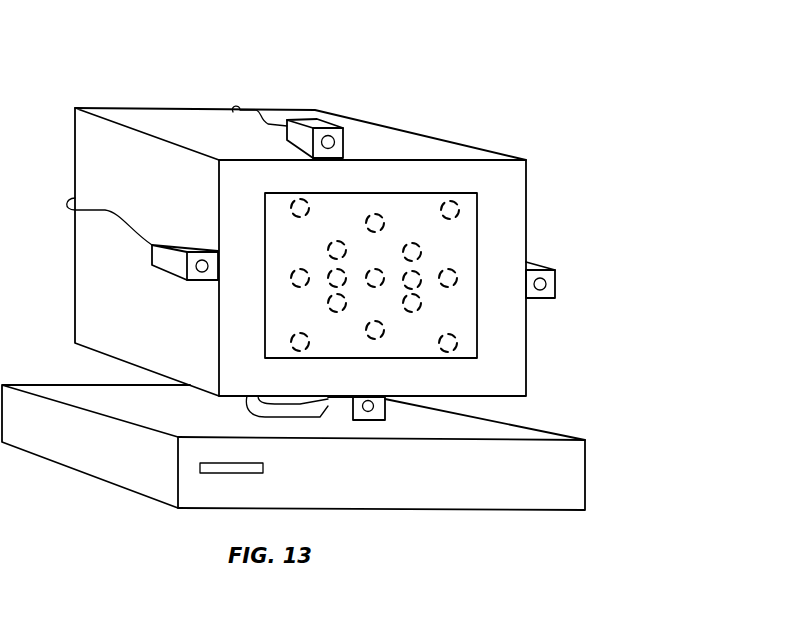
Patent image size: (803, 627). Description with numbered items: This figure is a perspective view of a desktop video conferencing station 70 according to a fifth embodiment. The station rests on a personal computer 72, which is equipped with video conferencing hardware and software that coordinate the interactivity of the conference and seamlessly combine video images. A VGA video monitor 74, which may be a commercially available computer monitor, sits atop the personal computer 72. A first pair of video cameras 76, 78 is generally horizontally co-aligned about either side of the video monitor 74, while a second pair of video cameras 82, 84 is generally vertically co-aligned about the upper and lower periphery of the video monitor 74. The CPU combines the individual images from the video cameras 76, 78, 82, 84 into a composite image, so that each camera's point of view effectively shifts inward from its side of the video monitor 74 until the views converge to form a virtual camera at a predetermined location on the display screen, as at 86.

The apparatus assembly 70 is at (560, 95).
The personal computer 72 is at (305, 447).
The video monitor 74 is at (467, 145).
The video camera 76 is at (181, 243).
The video camera 78 is at (567, 262).
The video camera 82 is at (313, 116).
The video camera 84 is at (392, 486).
The virtual camera location 86 is at (362, 263).